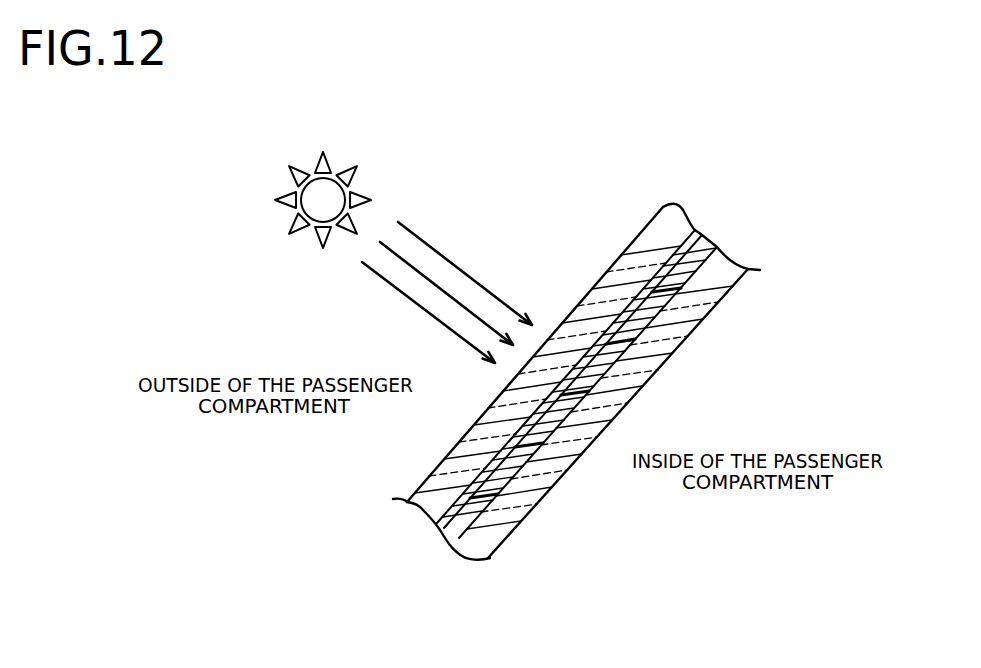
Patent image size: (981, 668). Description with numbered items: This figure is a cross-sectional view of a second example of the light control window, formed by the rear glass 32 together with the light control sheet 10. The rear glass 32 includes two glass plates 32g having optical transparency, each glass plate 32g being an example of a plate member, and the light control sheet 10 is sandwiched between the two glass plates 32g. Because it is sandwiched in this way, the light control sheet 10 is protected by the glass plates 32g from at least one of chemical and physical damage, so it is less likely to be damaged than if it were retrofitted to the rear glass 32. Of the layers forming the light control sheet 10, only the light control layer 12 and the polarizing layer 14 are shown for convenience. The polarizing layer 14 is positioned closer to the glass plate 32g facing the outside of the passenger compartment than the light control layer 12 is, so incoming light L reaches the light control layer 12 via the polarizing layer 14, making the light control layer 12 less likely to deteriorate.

The light control sheet 10 is at (730, 238).
The light control layer 12 is at (685, 278).
The polarizing layer 14 is at (660, 272).
The rear glass 32 is at (544, 437).
The glass plate 32g is at (437, 609).
The sunlight L is at (471, 275).